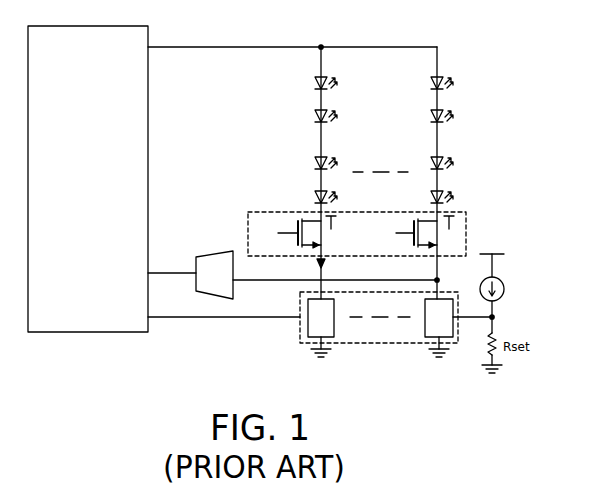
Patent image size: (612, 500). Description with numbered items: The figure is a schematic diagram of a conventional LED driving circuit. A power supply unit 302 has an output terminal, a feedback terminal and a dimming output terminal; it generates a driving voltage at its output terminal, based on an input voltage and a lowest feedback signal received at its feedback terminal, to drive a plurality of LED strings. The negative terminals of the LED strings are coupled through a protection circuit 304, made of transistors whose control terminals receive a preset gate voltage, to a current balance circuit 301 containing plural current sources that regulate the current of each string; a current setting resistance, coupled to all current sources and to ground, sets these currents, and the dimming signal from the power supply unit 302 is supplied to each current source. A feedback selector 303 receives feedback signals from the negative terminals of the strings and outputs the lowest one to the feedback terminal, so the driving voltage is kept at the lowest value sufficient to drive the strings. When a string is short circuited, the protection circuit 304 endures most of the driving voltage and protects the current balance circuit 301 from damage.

The current balance circuit 301 is at (300, 323).
The power supply unit 302 is at (88, 179).
The feedback selector 303 is at (218, 255).
The protection circuit 304 is at (466, 224).